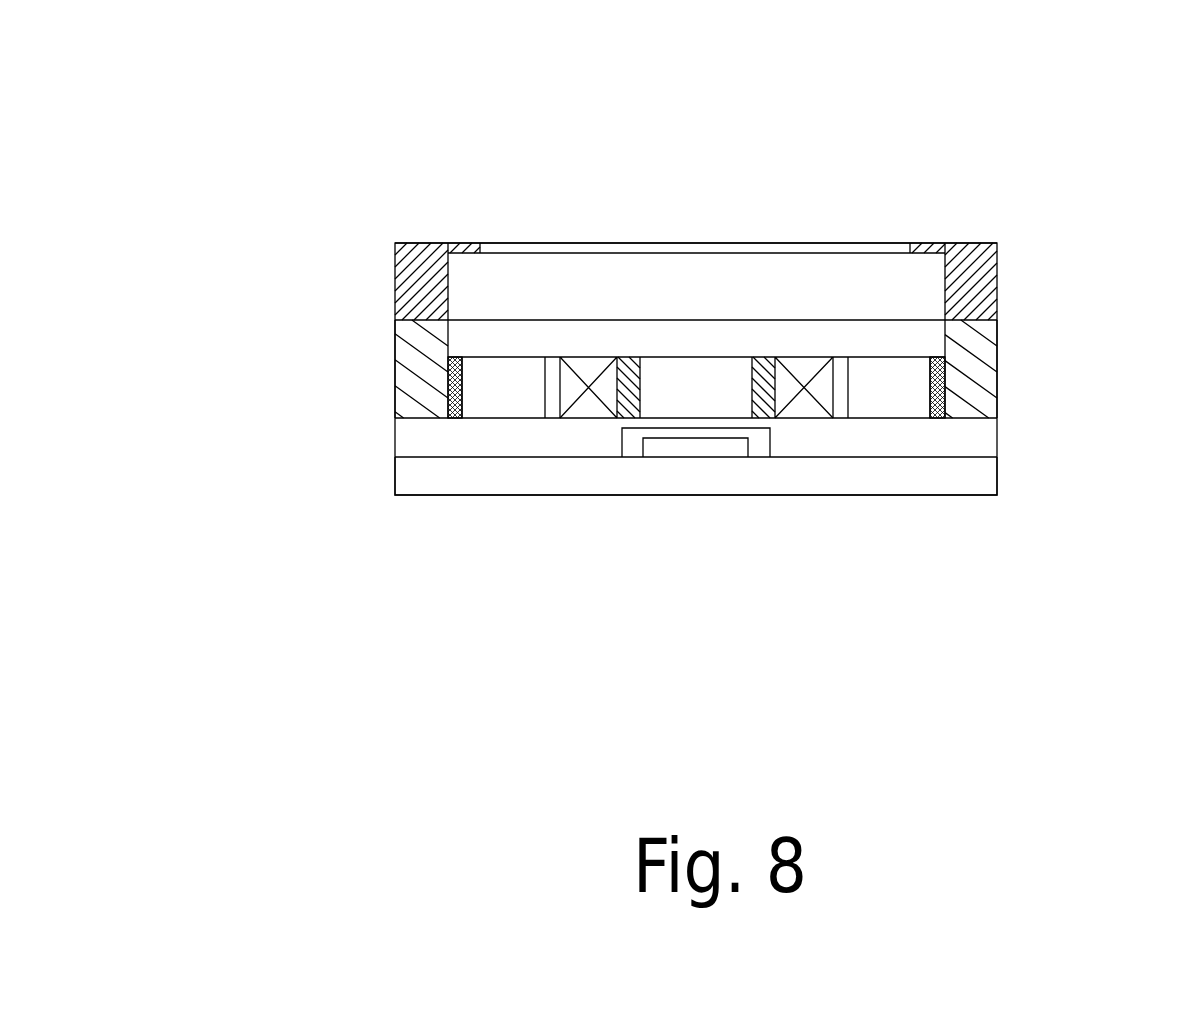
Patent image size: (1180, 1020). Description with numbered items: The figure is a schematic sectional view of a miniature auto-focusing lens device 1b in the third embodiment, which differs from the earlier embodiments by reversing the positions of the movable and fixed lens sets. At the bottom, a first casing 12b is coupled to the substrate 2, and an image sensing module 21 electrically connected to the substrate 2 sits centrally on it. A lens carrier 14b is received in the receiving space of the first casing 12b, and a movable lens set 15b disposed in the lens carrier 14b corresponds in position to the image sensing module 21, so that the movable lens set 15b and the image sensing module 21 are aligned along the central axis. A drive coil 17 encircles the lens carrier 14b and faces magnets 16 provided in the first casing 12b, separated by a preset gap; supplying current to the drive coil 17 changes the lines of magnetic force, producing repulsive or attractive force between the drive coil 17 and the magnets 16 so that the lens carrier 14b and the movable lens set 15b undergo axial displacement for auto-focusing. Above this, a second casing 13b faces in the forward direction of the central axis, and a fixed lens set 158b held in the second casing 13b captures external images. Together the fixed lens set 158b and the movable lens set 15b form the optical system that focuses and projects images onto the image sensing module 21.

The miniature auto-focusing lens device 1b is at (1075, 185).
The substrate 2 is at (468, 483).
The first casing 12b is at (410, 385).
The second casing 13b is at (393, 265).
The lens carrier 14b is at (618, 412).
The movable lens set 15b is at (707, 380).
The magnets 16 is at (497, 368).
The drive coil 17 is at (585, 410).
The image sensing module 21 is at (695, 450).
The fixed lens set 158b is at (627, 280).